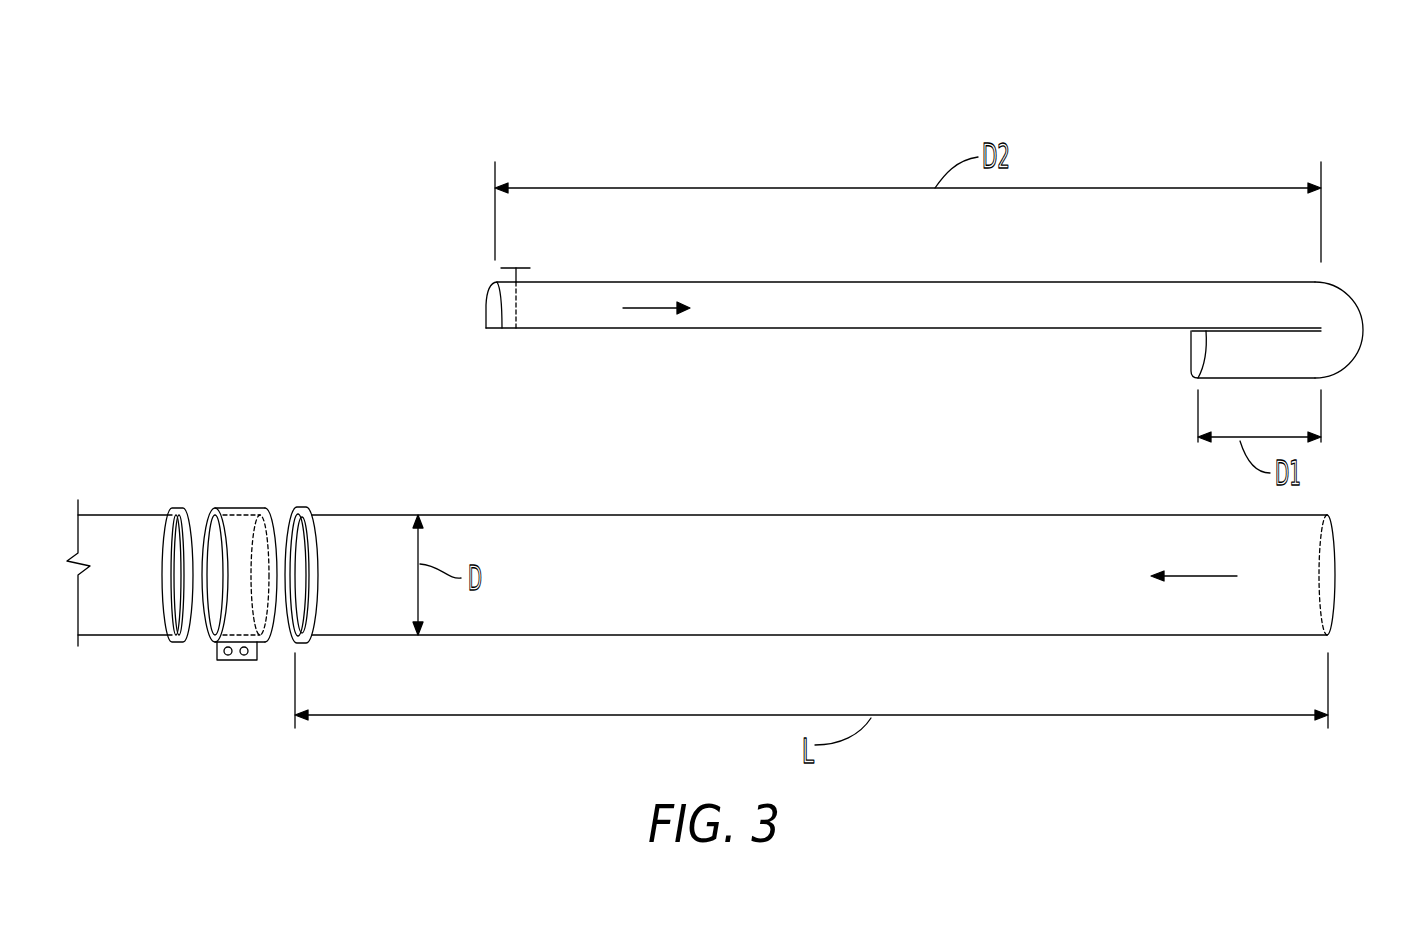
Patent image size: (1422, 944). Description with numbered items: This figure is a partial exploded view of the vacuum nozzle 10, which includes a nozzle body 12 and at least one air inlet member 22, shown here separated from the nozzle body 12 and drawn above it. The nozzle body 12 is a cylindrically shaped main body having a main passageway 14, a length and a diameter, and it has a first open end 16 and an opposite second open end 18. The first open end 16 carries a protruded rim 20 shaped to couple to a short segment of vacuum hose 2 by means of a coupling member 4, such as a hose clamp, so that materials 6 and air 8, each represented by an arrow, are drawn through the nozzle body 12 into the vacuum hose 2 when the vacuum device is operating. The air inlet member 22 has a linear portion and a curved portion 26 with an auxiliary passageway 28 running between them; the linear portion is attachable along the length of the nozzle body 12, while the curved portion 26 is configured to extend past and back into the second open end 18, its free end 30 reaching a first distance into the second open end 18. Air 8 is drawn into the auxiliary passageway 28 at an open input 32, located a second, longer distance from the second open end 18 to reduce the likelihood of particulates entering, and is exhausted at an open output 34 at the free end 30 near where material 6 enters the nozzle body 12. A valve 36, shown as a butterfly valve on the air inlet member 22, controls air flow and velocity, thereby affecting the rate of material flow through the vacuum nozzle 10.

The vacuum hose 2 is at (117, 547).
The coupling member 4 is at (243, 520).
The materials 6 is at (657, 309).
The air 8 is at (1213, 576).
The vacuum nozzle 10 is at (1255, 108).
The nozzle body 12 is at (843, 596).
The main passageway 14 is at (1342, 597).
The first open end 16 is at (292, 627).
The second open end 18 is at (1333, 626).
The protruded rim 20 is at (303, 511).
The air inlet member 22 is at (952, 319).
The curved portion 26 is at (1337, 306).
The auxiliary passageway 28 is at (476, 310).
The free end 30 is at (1232, 358).
The open input 32 is at (495, 282).
The open output 34 is at (1196, 357).
The valve 36 is at (522, 268).